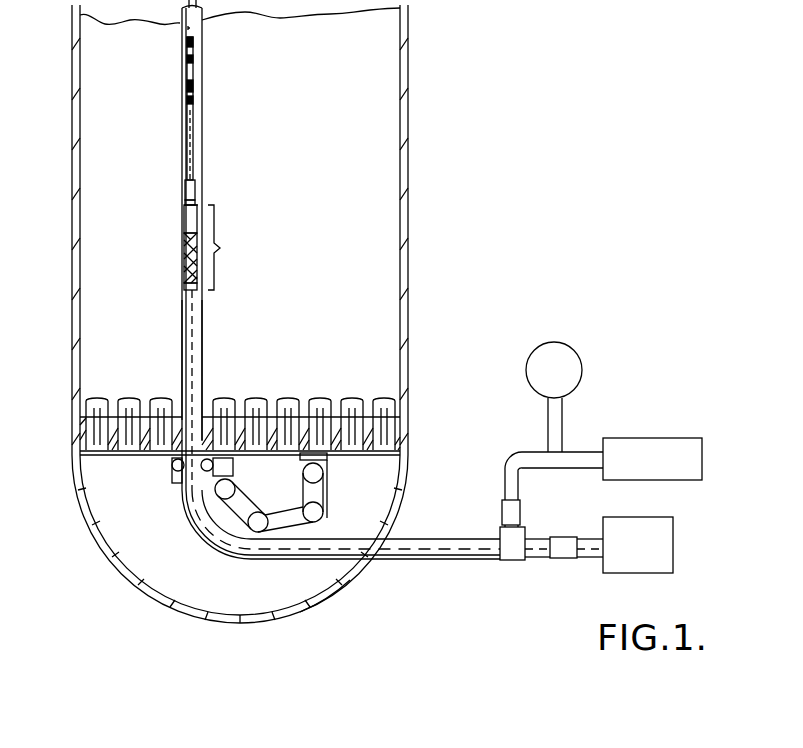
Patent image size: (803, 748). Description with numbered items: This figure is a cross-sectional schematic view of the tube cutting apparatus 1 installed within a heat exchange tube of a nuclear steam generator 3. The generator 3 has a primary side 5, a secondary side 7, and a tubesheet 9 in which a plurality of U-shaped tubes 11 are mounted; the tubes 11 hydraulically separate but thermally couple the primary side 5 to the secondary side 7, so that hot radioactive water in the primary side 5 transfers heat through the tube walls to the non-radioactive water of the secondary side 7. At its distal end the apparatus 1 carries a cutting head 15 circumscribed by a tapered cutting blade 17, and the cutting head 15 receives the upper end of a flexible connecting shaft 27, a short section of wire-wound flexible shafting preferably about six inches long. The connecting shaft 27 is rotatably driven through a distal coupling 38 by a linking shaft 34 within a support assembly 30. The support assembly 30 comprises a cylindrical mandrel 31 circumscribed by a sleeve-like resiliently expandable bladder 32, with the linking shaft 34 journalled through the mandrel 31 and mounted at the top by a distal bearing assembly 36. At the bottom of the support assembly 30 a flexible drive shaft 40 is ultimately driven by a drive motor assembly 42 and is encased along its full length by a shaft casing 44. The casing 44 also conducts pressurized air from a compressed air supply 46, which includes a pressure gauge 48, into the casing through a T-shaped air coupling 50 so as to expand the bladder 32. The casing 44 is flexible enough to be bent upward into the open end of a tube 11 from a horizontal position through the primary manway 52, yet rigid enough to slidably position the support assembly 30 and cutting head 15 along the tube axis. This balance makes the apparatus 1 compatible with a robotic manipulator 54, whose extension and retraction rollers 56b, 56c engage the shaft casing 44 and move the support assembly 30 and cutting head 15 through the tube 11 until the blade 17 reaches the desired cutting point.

The tube cutting apparatus 1 is at (181, 248).
The nuclear steam generator 3 is at (413, 265).
The primary side 5 is at (112, 548).
The secondary side 7 is at (82, 362).
The tubesheet 9 is at (336, 412).
The U-shaped tubes 11 is at (178, 363).
The cutting head 15 is at (196, 58).
The tapered cutting blade 17 is at (178, 36).
The flexible connecting shaft 27 is at (204, 118).
The support assembly 30 is at (222, 248).
The cylindrical mandrel 31 is at (184, 227).
The resiliently expandable bladder 32 is at (184, 270).
The linking shaft 34 is at (200, 204).
The distal bearing assembly 36 is at (185, 206).
The distal coupling 38 is at (178, 182).
The flexible drive shaft 40 is at (204, 334).
The drive motor assembly 42 is at (637, 517).
The shaft casing 44 is at (202, 378).
The compressed air supply 46 is at (657, 438).
The pressure gauge 48 is at (526, 373).
The T-shaped air coupling 50 is at (500, 536).
The primary manway 52 is at (348, 578).
The robotic manipulator 54 is at (238, 475).
The extension and retraction roller 56b is at (234, 463).
The guide roller 56c is at (172, 481).